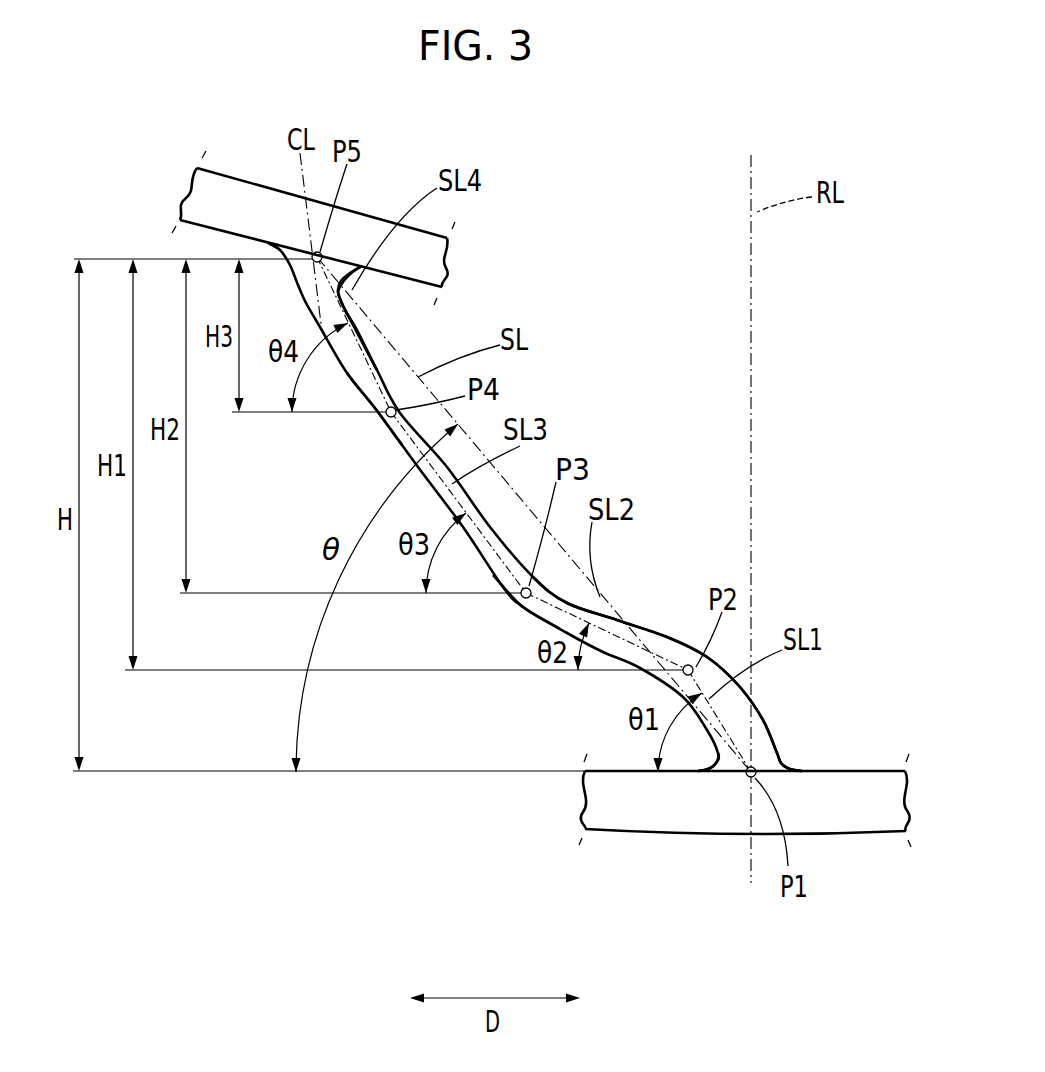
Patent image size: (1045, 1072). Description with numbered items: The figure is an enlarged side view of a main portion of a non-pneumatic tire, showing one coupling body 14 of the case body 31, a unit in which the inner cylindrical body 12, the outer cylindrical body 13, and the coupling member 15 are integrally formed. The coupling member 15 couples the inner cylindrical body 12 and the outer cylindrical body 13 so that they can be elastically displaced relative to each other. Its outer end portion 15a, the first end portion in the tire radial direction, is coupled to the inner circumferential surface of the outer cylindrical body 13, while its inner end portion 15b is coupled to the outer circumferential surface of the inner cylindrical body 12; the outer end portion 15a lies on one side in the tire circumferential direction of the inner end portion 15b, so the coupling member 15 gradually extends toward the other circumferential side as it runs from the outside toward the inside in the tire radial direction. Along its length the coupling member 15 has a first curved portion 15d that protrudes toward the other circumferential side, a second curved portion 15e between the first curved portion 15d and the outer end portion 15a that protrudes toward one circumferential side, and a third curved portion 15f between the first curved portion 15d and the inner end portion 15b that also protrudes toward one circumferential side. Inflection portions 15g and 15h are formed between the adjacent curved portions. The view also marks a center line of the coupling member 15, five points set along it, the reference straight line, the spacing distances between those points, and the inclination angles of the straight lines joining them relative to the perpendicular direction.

The case body 31 is at (175, 183).
The inner cylindrical body 12 is at (228, 197).
The outer cylindrical body 13 is at (843, 803).
The coupling body 14 is at (765, 712).
The coupling member 15 is at (403, 450).
The outer end portion 15a is at (772, 740).
The inner end portion 15b is at (343, 287).
The first curved portion 15d is at (515, 606).
The second curved portion 15e is at (665, 637).
The third curved portion 15f is at (362, 342).
The inflection portion 15g is at (569, 600).
The inflection portion 15h is at (378, 418).